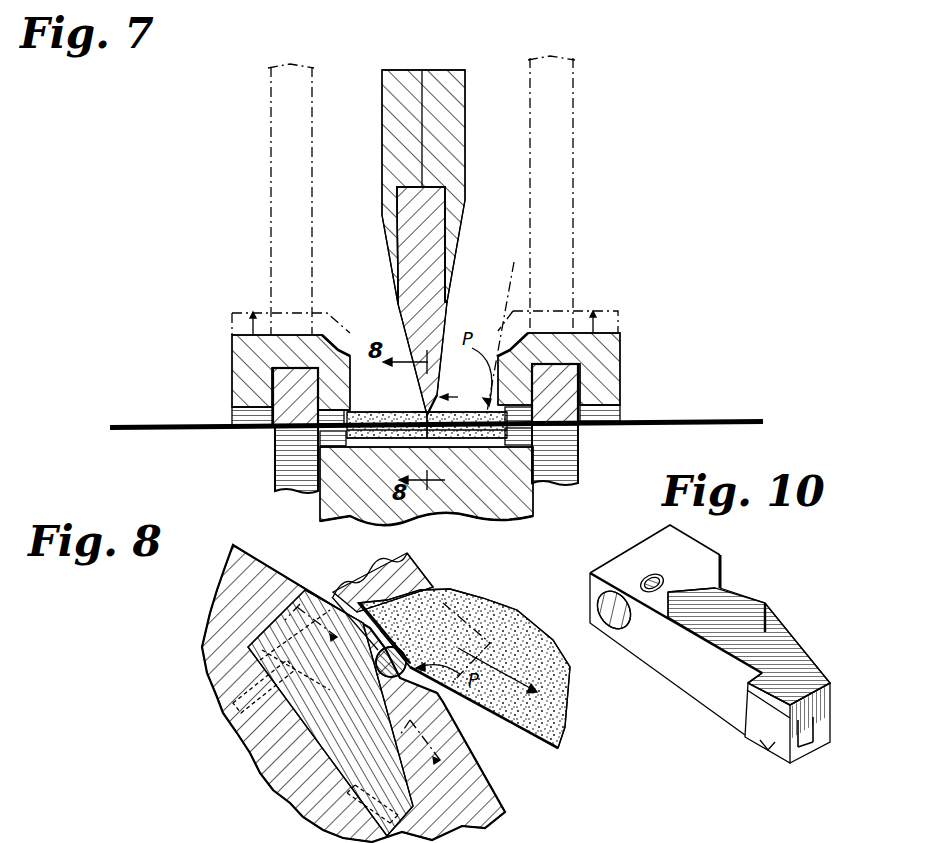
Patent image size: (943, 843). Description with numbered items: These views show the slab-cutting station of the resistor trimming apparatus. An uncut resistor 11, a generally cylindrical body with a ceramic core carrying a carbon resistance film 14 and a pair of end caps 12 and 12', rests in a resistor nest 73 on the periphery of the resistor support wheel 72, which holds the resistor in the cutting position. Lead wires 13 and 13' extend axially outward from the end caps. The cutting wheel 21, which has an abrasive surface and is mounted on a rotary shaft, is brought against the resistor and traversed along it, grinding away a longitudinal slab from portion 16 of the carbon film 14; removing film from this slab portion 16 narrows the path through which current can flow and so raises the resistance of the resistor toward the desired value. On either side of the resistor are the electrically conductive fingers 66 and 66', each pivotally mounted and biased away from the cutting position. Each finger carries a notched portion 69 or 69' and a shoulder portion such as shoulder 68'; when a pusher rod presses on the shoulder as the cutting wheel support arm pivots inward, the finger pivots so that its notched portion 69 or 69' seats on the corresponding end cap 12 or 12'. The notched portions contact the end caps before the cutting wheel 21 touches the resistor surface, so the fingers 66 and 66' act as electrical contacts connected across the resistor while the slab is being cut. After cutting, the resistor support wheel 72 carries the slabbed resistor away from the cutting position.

In FIG. 7, the cutting wheel 21 is at (466, 216).
In FIG. 8, the cutting wheel 21 is at (527, 584).
In FIG. 7, the electrically conductive finger 66 is at (269, 380).
In FIG. 7, the electrically conductive finger 66' is at (588, 373).
In FIG. 8, the electrically conductive finger 66' is at (407, 608).
In FIG. 10, the electrically conductive finger 66' is at (701, 630).
In FIG. 7, the lead wire 13 is at (270, 405).
In FIG. 7, the lead wire 13' is at (596, 402).
In FIG. 7, the notched portion 69 is at (292, 412).
In FIG. 8, the notched portion 69 is at (420, 634).
In FIG. 7, the notched portion 69' is at (565, 410).
In FIG. 10, the notched portion 69' is at (779, 733).
In FIG. 7, the end cap 12 is at (278, 460).
In FIG. 8, the end cap 12 is at (330, 713).
In FIG. 7, the end cap 12' is at (578, 454).
In FIG. 7, the resistor support wheel 72 is at (328, 507).
In FIG. 8, the resistor support wheel 72 is at (496, 810).
In FIG. 7, the uncut resistor 11 is at (360, 412).
In FIG. 8, the uncut resistor 11 is at (396, 648).
In FIG. 7, the carbon resistance film 14 is at (380, 400).
In FIG. 7, the slab portion of carbon film 16 is at (455, 412).
In FIG. 7, the resistor nest 73 is at (420, 413).
In FIG. 8, the resistor nest 73 is at (378, 668).
In FIG. 10, the shoulder portion 68' is at (749, 630).